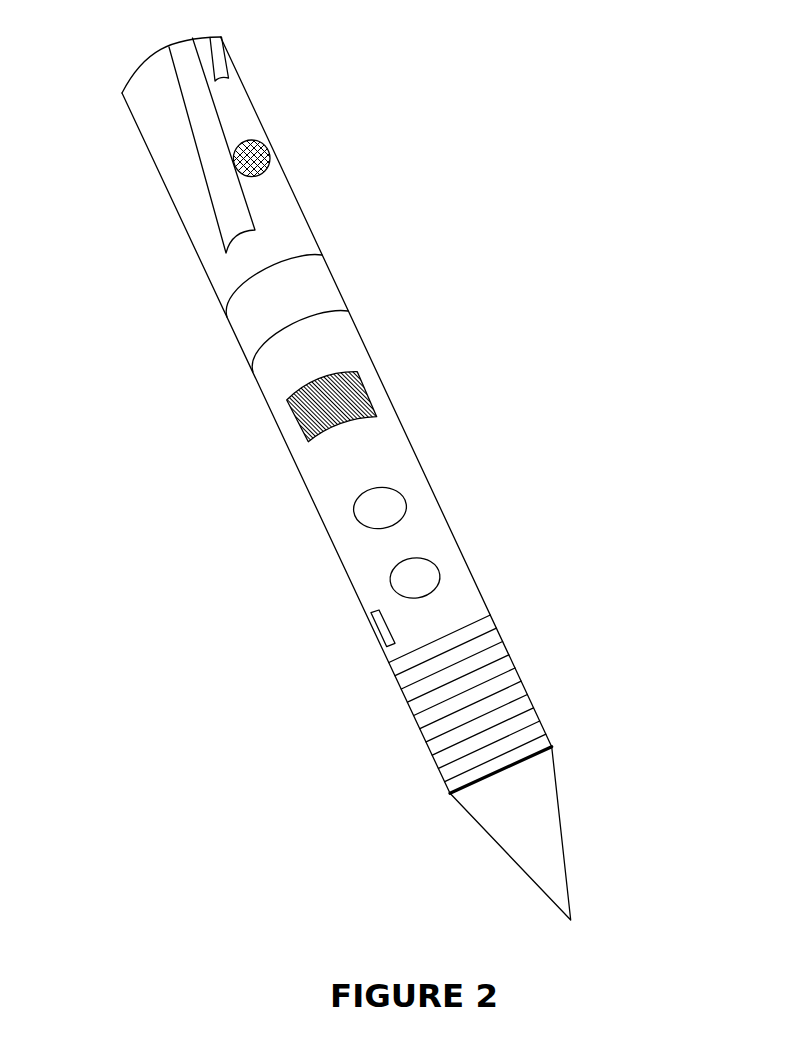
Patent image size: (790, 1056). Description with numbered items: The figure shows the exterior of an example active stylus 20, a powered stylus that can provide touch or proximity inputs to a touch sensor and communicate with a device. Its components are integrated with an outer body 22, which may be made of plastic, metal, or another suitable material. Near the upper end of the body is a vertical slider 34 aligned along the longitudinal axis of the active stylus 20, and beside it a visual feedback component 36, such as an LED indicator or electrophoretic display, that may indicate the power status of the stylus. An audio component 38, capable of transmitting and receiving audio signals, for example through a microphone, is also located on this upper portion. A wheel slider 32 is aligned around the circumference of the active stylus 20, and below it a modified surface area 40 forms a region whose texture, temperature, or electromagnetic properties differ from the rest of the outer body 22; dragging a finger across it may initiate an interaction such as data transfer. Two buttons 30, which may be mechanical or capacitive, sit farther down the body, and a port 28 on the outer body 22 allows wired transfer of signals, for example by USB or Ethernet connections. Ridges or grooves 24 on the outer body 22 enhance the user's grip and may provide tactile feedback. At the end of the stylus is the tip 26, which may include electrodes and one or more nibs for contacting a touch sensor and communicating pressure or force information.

The active stylus 20 is at (371, 478).
The outer body 22 is at (420, 457).
The ridges or grooves 24 is at (490, 661).
The tip 26 is at (562, 825).
The port 28 is at (380, 633).
The buttons 30 is at (400, 582).
The wheel slider 32 is at (257, 326).
The vertical slider 34 is at (187, 133).
The visual feedback component 36 is at (204, 57).
The audio component 38 is at (265, 146).
The modified surface area 40 is at (330, 395).